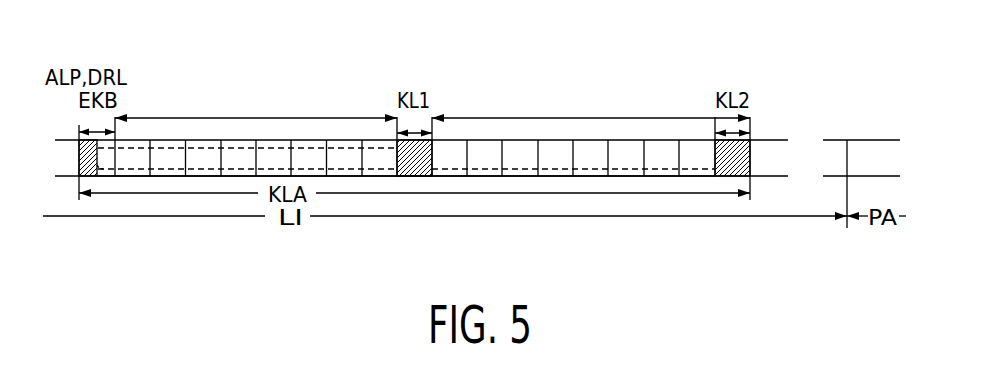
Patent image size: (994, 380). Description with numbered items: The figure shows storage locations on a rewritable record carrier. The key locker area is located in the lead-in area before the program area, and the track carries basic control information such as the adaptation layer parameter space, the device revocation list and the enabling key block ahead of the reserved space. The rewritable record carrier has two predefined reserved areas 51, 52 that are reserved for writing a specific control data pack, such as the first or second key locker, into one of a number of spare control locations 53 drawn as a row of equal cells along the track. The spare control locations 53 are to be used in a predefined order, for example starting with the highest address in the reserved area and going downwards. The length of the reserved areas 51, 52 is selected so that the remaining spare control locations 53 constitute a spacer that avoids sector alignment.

The reserved area 51 is at (232, 116).
The reserved area 52 is at (552, 117).
The spare control locations 53 is at (376, 177).